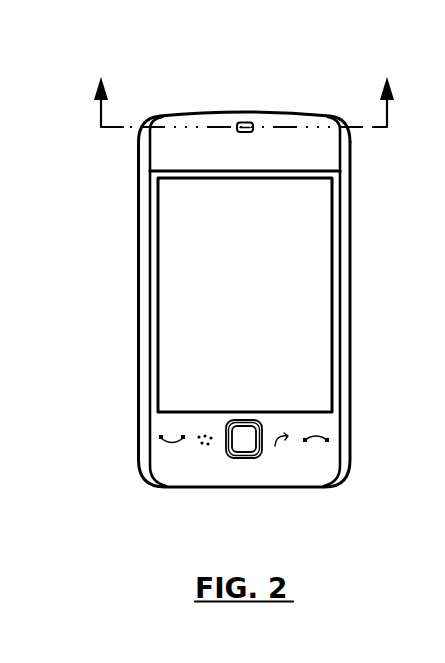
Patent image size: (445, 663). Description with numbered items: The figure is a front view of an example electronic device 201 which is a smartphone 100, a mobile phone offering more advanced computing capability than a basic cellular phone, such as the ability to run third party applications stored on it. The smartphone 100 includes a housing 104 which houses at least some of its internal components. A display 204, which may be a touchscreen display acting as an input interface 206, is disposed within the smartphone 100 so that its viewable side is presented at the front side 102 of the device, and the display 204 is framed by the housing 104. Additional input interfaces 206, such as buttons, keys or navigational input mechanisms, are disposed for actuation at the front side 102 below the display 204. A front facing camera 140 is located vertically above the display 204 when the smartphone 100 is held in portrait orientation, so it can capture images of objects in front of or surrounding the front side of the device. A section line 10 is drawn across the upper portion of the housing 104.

The section line 10 is at (246, 87).
The smartphone 100 is at (220, 58).
The electronic device 201 is at (176, 82).
The housing 104 is at (353, 190).
The front side 102 is at (152, 426).
The display 204 is at (153, 248).
The input interface 206 is at (153, 315).
The front facing camera 140 is at (245, 120).